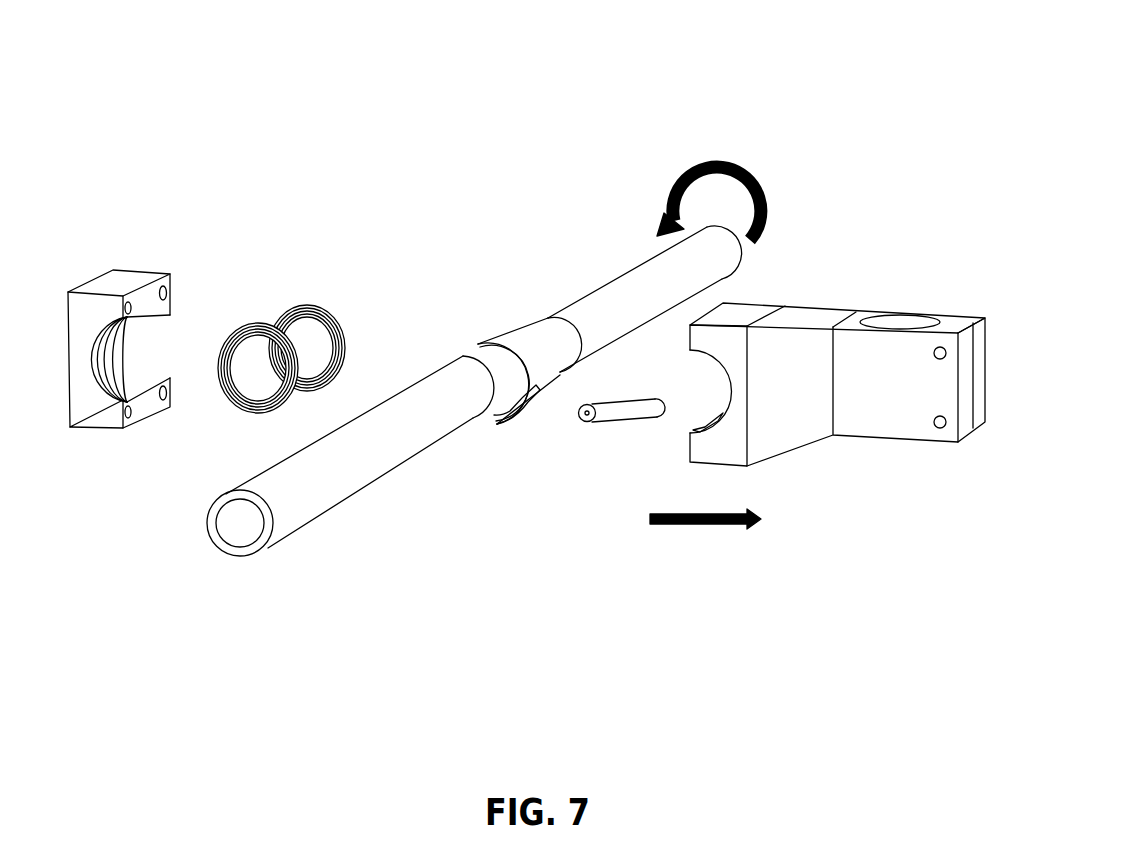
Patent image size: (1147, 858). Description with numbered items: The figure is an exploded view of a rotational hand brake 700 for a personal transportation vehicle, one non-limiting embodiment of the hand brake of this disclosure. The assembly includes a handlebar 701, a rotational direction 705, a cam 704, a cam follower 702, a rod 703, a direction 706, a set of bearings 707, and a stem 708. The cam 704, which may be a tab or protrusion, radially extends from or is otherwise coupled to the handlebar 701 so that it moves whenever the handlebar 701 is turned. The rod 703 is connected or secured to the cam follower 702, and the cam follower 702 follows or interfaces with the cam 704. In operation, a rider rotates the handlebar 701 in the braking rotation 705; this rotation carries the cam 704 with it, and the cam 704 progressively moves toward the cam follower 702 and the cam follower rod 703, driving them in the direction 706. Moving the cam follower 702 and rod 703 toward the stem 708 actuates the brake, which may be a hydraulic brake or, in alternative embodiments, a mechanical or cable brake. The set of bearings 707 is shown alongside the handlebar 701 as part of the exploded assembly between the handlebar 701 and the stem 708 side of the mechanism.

The rotational hand brake 700 is at (811, 82).
The handlebar 701 is at (583, 292).
The cam follower 702 is at (583, 421).
The rod 703 is at (632, 420).
The cam 704 is at (498, 424).
The rotational direction 705 is at (713, 197).
The direction 706 is at (693, 525).
The set of bearings 707 is at (283, 308).
The stem 708 is at (880, 438).